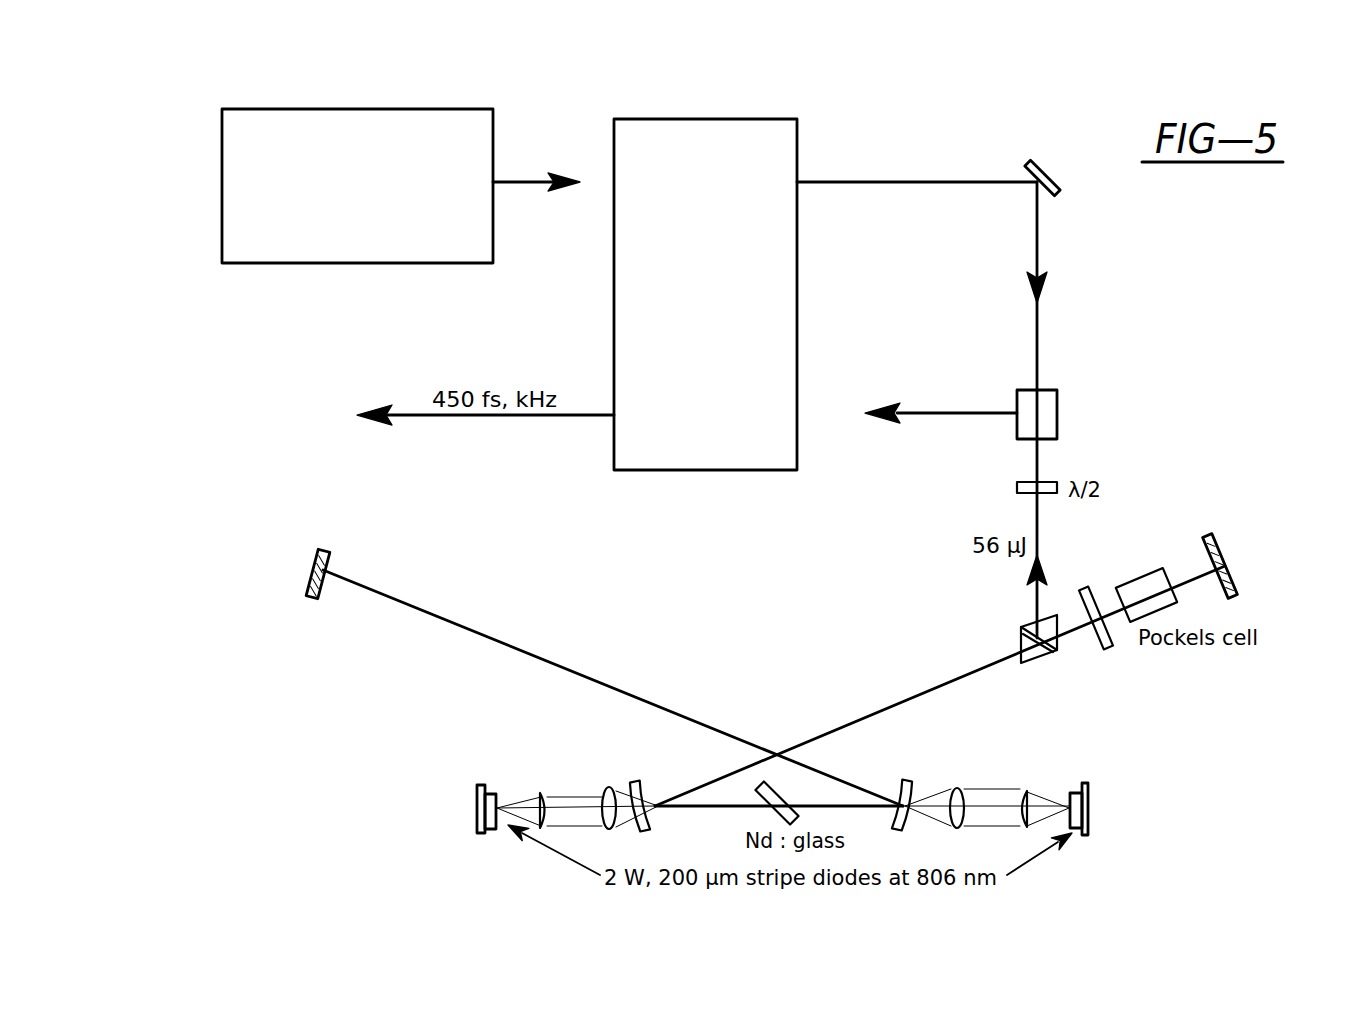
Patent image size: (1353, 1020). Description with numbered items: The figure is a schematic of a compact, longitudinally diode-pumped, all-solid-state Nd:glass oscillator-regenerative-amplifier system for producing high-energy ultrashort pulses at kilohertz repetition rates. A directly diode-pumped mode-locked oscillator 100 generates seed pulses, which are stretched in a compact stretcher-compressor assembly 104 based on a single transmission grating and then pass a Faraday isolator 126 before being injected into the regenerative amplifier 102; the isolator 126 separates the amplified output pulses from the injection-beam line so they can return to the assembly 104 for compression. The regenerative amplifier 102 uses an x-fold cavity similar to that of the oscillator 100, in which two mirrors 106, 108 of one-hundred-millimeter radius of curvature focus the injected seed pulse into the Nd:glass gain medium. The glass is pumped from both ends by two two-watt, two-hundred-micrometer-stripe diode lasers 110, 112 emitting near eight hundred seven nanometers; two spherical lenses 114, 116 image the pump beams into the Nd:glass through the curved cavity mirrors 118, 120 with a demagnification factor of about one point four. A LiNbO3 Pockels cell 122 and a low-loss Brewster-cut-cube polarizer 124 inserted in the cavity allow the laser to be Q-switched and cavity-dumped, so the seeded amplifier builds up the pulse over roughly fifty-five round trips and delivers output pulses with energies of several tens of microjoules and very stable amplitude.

The mode-locked oscillator 100 is at (222, 176).
The regenerative amplifier 102 is at (1098, 877).
The stretcher-compressor assembly 104 is at (770, 119).
The mirror 106 is at (331, 561).
The mirror 108 is at (1107, 648).
The diode laser 110 is at (478, 831).
The diode laser 112 is at (1090, 830).
The spherical lens 114 is at (607, 789).
The spherical lens 116 is at (960, 788).
The curved cavity mirror 118 is at (628, 782).
The curved cavity mirror 120 is at (912, 780).
The Pockels cell 122 is at (1240, 599).
The Brewster-cut-cube polarizer 124 is at (1020, 641).
The Faraday isolator 126 is at (1058, 395).